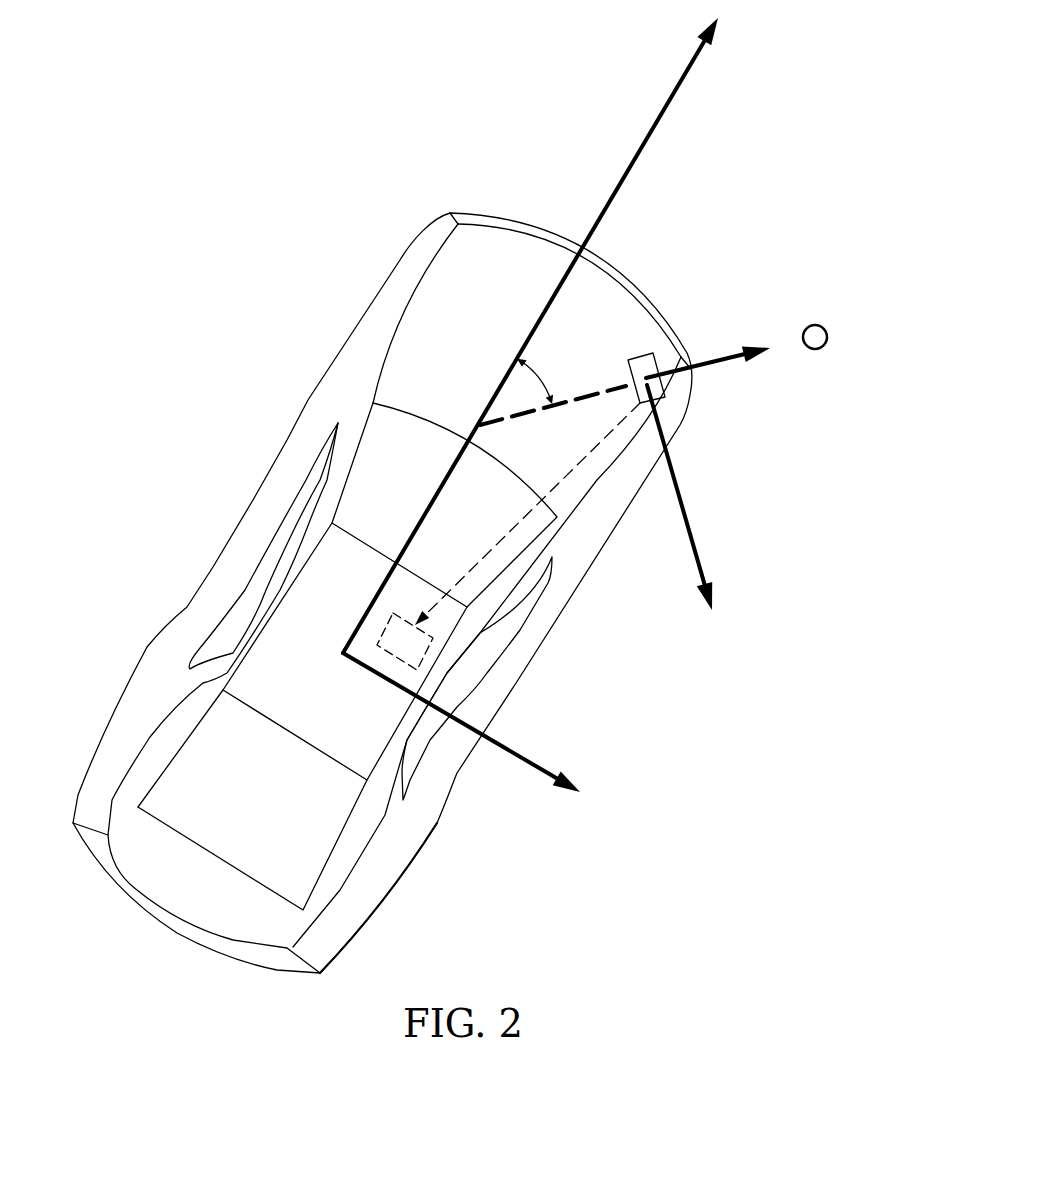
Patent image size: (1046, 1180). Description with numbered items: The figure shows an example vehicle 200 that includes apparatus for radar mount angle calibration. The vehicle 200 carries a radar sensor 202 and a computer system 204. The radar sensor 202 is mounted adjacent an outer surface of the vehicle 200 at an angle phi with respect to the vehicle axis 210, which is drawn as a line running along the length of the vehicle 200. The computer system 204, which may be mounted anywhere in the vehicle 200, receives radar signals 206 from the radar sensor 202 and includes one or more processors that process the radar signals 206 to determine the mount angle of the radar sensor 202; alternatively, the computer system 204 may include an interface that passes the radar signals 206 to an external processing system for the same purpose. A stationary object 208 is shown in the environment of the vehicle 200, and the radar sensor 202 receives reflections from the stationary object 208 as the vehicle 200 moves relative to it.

The vehicle 200 is at (300, 394).
The radar sensor 202 is at (633, 357).
The computer system 204 is at (393, 657).
The radar signals 206 is at (500, 541).
The stationary object 208 is at (817, 324).
The vehicle axis 210 is at (524, 345).